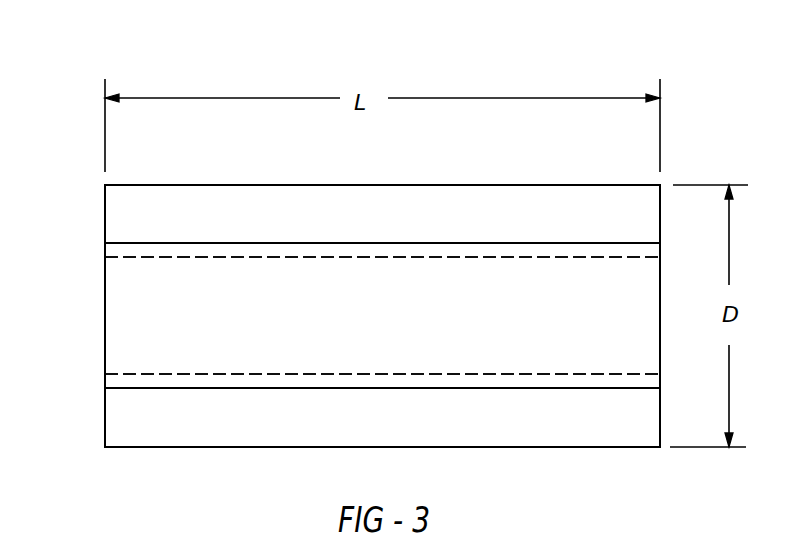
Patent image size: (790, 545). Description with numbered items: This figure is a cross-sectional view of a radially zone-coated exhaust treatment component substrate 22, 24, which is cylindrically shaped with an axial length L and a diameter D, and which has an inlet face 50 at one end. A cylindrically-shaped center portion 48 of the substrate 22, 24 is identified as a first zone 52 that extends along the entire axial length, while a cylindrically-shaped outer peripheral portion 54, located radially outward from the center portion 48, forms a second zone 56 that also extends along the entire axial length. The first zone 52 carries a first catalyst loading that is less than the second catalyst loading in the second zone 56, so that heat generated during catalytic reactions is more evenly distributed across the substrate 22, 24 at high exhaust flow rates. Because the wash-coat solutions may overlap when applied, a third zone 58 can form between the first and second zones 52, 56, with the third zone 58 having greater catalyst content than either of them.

The exhaust treatment component substrate 22 is at (715, 140).
The exhaust treatment component substrate 24 is at (382, 316).
The center portion 48 is at (105, 289).
The inlet face 50 is at (100, 415).
The first zone 52 is at (414, 328).
The outer peripheral portion 54 is at (105, 208).
The second zone 56 is at (414, 226).
The third zone 58 is at (472, 259).